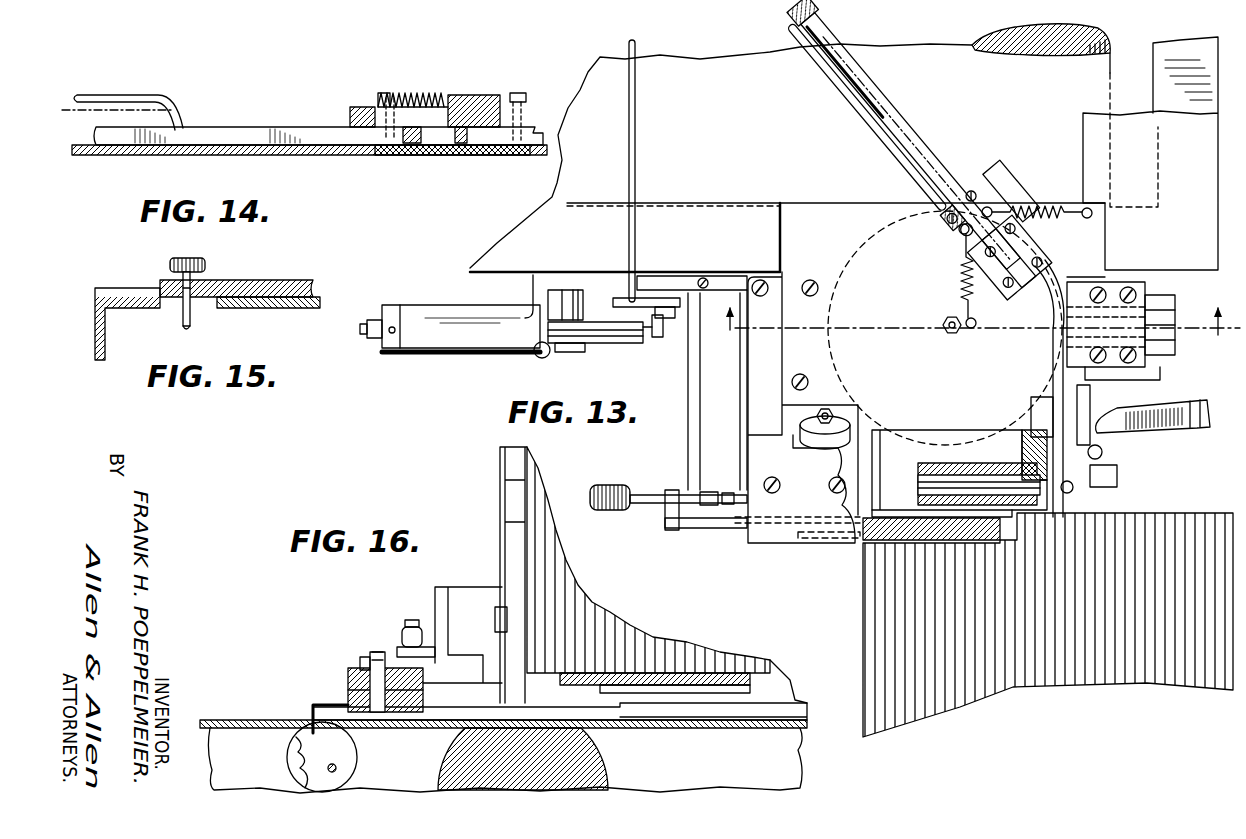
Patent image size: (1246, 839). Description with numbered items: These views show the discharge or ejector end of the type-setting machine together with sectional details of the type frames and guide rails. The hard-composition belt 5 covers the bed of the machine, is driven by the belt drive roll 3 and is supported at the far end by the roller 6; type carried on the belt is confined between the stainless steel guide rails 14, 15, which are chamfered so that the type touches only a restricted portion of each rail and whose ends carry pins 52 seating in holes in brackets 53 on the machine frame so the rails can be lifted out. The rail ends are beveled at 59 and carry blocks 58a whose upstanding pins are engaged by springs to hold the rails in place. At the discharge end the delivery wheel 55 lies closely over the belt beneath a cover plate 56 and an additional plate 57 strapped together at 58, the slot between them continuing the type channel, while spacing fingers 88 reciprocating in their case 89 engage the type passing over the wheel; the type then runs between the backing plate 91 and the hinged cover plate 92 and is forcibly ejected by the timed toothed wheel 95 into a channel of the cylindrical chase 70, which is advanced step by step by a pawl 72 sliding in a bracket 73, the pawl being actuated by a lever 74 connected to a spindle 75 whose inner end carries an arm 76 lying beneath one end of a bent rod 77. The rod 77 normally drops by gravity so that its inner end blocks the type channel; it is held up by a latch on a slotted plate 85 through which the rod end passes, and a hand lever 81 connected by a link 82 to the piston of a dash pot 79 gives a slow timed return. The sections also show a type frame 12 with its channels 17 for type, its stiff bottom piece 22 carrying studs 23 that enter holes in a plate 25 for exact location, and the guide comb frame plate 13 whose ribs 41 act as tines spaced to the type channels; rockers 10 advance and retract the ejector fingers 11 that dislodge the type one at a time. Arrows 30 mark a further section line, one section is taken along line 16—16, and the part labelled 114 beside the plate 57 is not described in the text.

In FIG. 13, the belt drive roll 3 is at (1112, 44).
In FIG. 14, the belt 5 is at (265, 155).
In FIG. 15, the belt 5 is at (245, 309).
In FIG. 13, the belt 5 is at (697, 56).
In FIG. 16, the belt 5 is at (682, 729).
In FIG. 16, the roller 6 is at (603, 775).
In FIG. 16, the spring pressed rockers 10 is at (300, 752).
In FIG. 16, the ejector fingers 11 is at (312, 707).
In FIG. 16, the frames 12 is at (518, 560).
In FIG. 16, the frame plate 13 is at (780, 665).
In FIG. 13, the guide rail 14 is at (870, 110).
In FIG. 14, the guide rail 15 is at (244, 126).
In FIG. 15, the guide rail 15 is at (290, 281).
In FIG. 13, the guide rail 15 is at (912, 115).
In FIG. 13, the grooved block 16 is at (1180, 520).
In FIG. 16, the channels 17 is at (632, 626).
In FIG. 16, the stiff bottom piece 22 is at (435, 590).
In FIG. 16, the studs 23 is at (410, 625).
In FIG. 16, the plate 25 is at (348, 680).
In FIG. 13, the section line 30 is at (970, 308).
In FIG. 16, the ribs 41 is at (745, 720).
In FIG. 15, the pins 52 is at (205, 265).
In FIG. 15, the brackets 53 is at (158, 310).
In FIG. 14, the delivery wheel 55 is at (376, 152).
In FIG. 13, the delivery wheel 55 is at (862, 236).
In FIG. 13, the cover plate 56 is at (868, 213).
In FIG. 14, the additional plate 57 is at (455, 150).
In FIG. 13, the additional plate 57 is at (1018, 178).
In FIG. 13, the strap 58 is at (1010, 304).
In FIG. 14, the blocks 58a is at (360, 107).
In FIG. 13, the blocks 58a is at (975, 180).
In FIG. 14, the beveled ends 59 is at (406, 150).
In FIG. 13, the cylindrical chase 70 is at (863, 583).
In FIG. 13, the pawl 72 is at (712, 532).
In FIG. 13, the bracket 73 is at (816, 540).
In FIG. 13, the lever 74 is at (626, 490).
In FIG. 13, the spindle 75 is at (702, 402).
In FIG. 13, the arm 76 is at (663, 296).
In FIG. 14, the rod 77 is at (169, 96).
In FIG. 13, the rod 77 is at (640, 228).
In FIG. 13, the dash pot 79 is at (440, 358).
In FIG. 13, the hand lever 81 is at (540, 358).
In FIG. 13, the link 82 is at (604, 345).
In FIG. 13, the slotted plate 85 is at (616, 288).
In FIG. 13, the type spacing fingers 88 is at (1035, 345).
In FIG. 13, the case 89 is at (1160, 365).
In FIG. 13, the backing plate 91 is at (1030, 403).
In FIG. 13, the hinged cover plate 92 is at (1108, 410).
In FIG. 13, the timed toothed wheel 95 is at (1075, 508).
In FIG. 13, the bracket 114 is at (1020, 247).